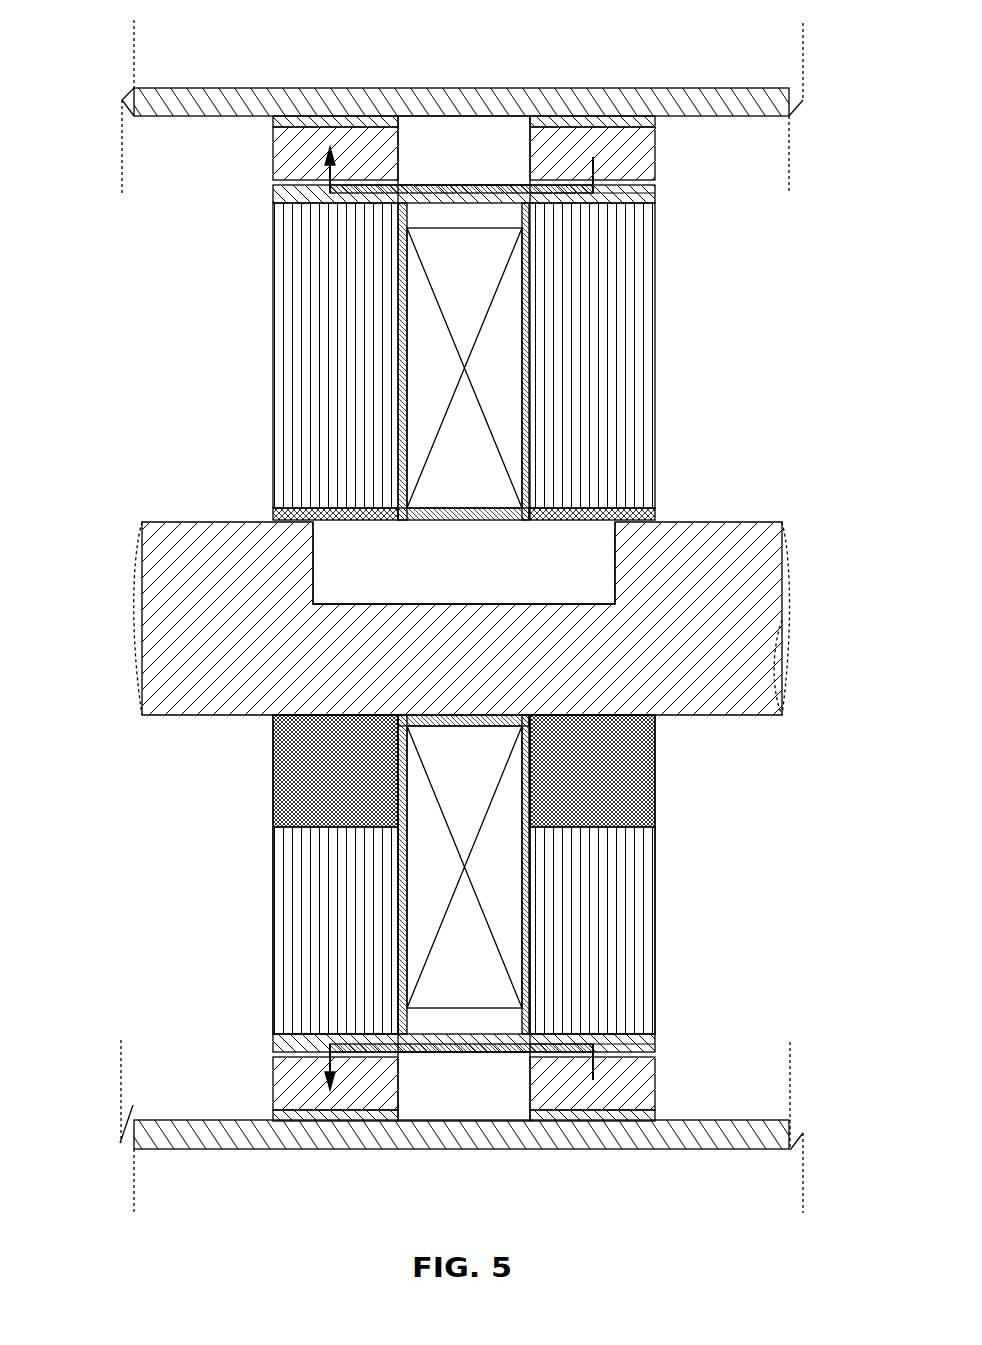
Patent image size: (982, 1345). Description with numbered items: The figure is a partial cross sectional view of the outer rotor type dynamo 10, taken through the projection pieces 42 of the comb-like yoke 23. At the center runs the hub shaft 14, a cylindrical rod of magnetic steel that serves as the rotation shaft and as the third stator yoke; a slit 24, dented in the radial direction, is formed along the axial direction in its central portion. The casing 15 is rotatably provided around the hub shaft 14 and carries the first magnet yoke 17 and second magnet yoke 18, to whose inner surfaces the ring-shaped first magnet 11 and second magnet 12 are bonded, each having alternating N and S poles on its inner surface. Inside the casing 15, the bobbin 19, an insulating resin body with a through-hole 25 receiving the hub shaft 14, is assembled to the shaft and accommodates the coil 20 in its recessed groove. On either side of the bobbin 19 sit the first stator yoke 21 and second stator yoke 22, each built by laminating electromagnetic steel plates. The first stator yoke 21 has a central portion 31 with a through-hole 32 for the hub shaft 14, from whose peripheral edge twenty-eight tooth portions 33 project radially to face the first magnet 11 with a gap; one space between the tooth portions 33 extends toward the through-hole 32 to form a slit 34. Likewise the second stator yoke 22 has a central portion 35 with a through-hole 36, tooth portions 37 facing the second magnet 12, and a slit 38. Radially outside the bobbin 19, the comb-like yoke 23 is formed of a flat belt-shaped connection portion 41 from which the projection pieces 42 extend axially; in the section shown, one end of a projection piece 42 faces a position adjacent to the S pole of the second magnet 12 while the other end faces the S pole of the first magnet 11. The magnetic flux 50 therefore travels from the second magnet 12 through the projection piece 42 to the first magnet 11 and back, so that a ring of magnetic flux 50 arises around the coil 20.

The outer rotor type dynamo 10 is at (112, 304).
The first magnet 11 is at (273, 163).
The second magnet 12 is at (660, 162).
The hub shaft 14 is at (172, 521).
The casing 15 is at (205, 88).
The first magnet yoke 17 is at (273, 123).
The second magnet yoke 18 is at (655, 123).
The bobbin 19 is at (427, 193).
The coil 20 is at (501, 224).
The first stator yoke 21 is at (193, 775).
The second stator yoke 22 is at (735, 775).
The comb-like yoke 23 is at (461, 528).
The slit 24 is at (590, 562).
The through-hole 25 is at (540, 518).
The central portion 31 is at (273, 793).
The through-hole 32 is at (275, 716).
The tooth portions 33 is at (280, 918).
The slit 34 is at (284, 476).
The central portion 35 is at (655, 793).
The through-hole 36 is at (655, 716).
The tooth portions 37 is at (645, 918).
The slit 38 is at (643, 476).
The connection portion 41 is at (458, 193).
The projection pieces 42 is at (273, 195).
The magnetic flux 50 is at (565, 200).